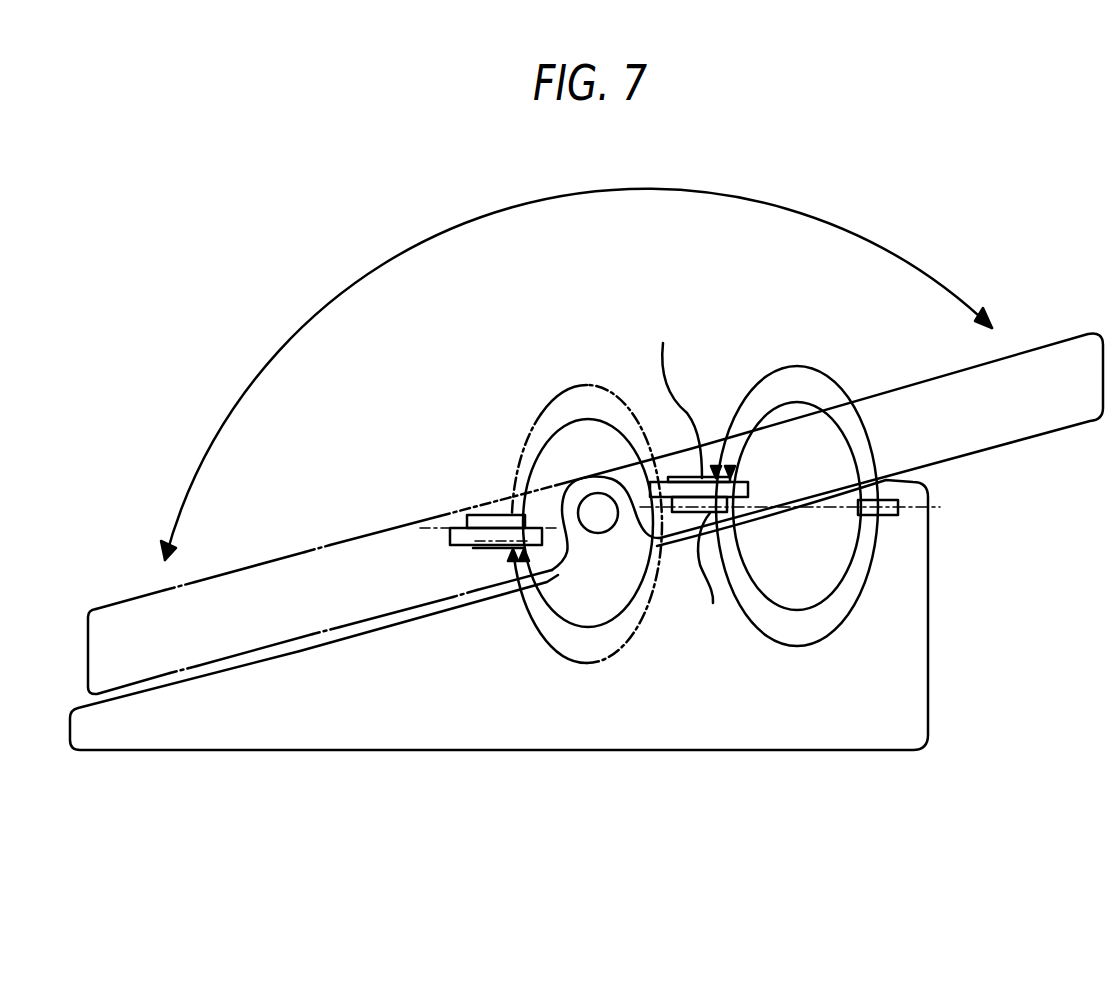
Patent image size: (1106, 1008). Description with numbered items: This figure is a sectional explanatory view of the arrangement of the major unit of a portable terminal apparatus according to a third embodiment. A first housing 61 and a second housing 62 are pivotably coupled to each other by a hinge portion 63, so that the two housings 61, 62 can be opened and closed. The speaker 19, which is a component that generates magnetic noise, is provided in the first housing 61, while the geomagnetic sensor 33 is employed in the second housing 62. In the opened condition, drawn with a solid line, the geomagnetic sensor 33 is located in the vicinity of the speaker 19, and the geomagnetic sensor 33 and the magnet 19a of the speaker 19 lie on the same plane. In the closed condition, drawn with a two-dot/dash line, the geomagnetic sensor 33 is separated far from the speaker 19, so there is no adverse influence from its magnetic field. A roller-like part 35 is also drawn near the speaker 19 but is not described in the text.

The first housing 61 is at (1075, 350).
The second housing 62 is at (832, 713).
The hinge portion 63 is at (593, 503).
The roller 35 is at (780, 368).
The geomagnetic sensor 33 is at (888, 517).
The speaker 19 is at (675, 391).
The magnet 19a is at (695, 575).